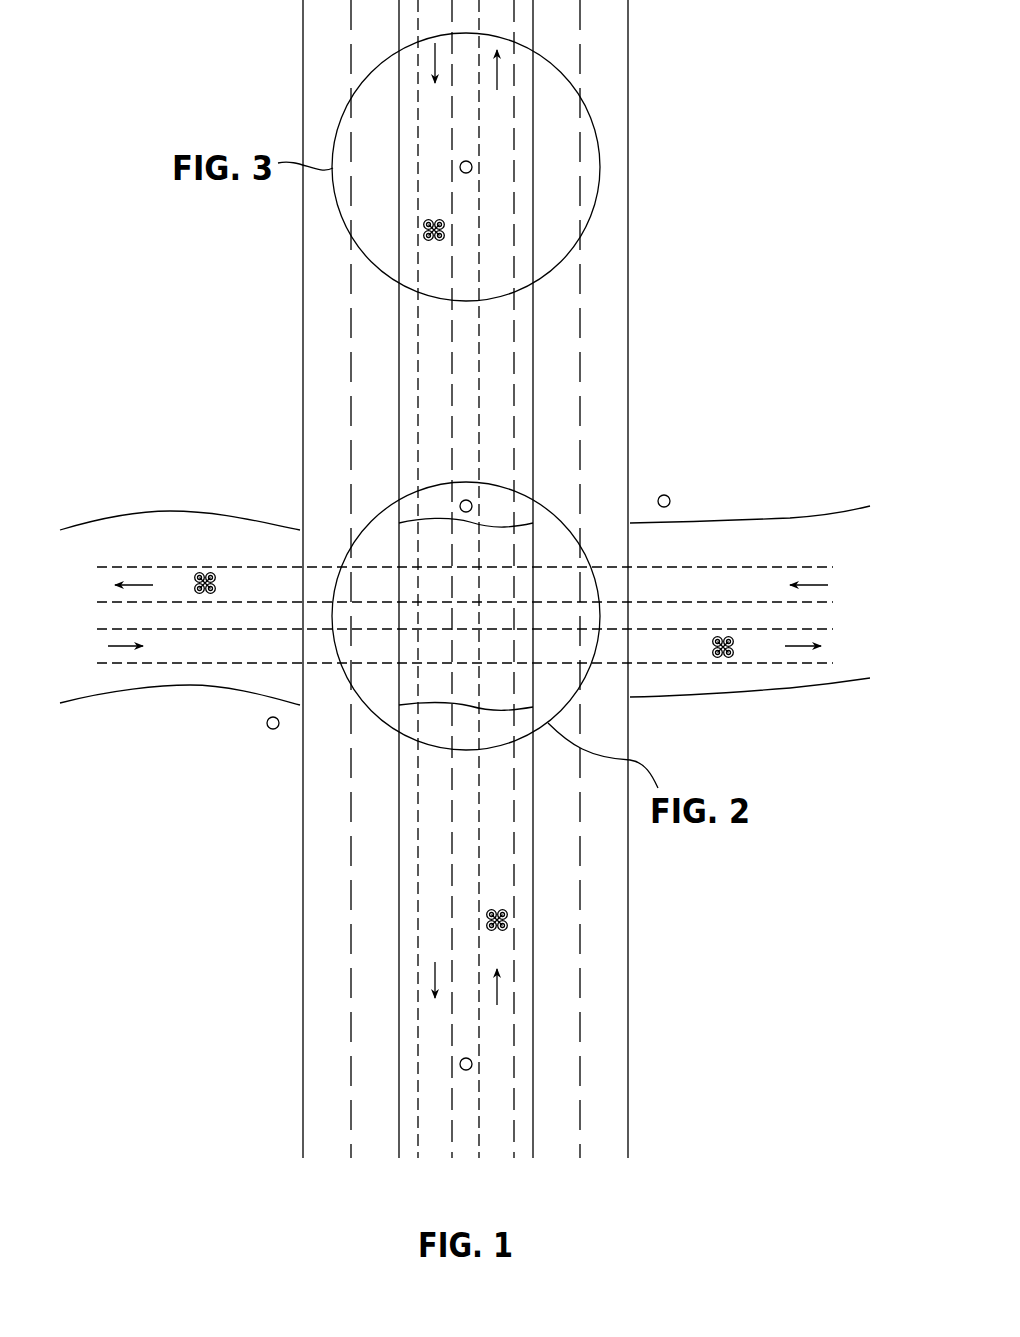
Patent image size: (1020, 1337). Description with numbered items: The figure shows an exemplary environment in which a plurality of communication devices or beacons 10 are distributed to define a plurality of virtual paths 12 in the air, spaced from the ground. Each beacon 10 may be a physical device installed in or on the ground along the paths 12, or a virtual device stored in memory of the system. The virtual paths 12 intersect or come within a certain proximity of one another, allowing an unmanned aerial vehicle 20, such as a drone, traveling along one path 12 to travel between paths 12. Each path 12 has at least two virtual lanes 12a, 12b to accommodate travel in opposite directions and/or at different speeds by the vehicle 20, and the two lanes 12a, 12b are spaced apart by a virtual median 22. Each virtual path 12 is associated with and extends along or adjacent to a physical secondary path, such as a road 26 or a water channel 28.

The beacon 10 is at (472, 166).
The virtual path 12 is at (470, 342).
The virtual lane 12a is at (428, 267).
The virtual lane 12b is at (500, 267).
The unmanned aerial vehicle 20 is at (422, 231).
The virtual median 22 is at (200, 625).
The road 26 is at (333, 368).
The water channel 28 is at (140, 538).